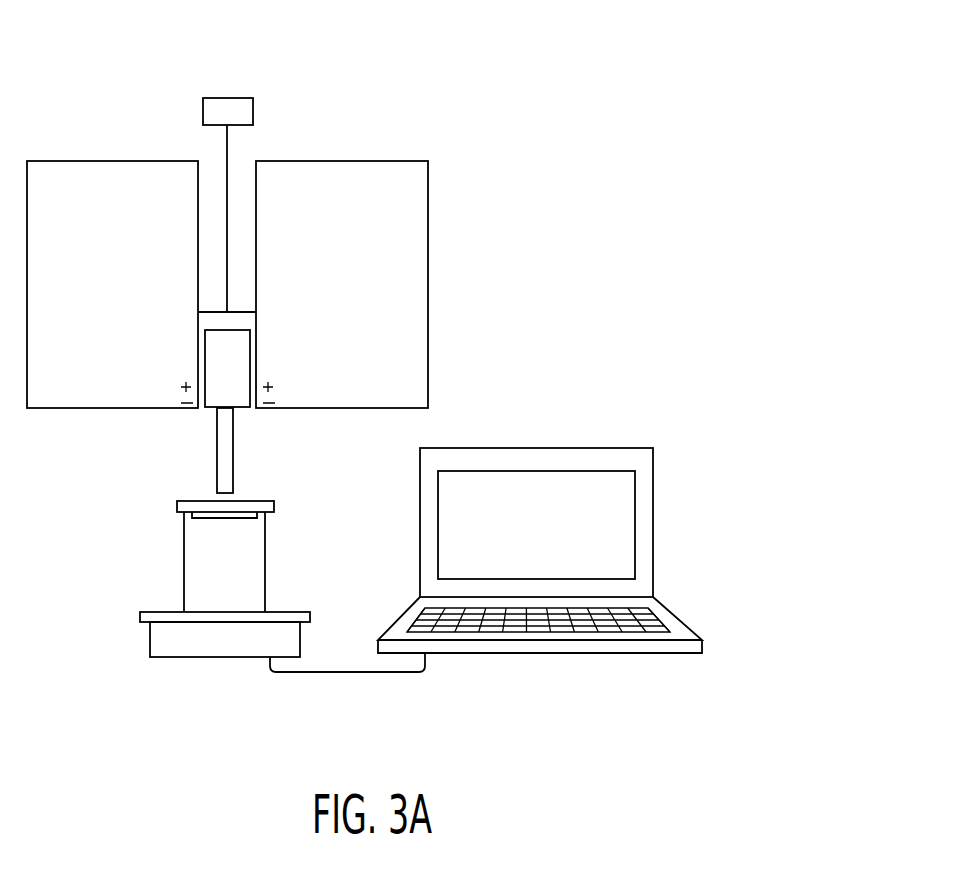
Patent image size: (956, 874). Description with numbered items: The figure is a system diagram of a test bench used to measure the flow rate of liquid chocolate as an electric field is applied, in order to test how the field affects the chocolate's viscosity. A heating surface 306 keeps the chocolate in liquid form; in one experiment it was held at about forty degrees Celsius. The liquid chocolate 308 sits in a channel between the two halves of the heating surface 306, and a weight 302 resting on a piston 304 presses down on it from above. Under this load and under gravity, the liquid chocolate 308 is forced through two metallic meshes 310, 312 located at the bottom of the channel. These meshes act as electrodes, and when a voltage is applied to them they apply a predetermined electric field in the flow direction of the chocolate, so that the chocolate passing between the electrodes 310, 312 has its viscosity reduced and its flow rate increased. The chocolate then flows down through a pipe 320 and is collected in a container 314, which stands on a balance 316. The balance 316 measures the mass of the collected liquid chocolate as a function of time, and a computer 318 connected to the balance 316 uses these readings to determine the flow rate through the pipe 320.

The weight 302 is at (203, 108).
The piston 304 is at (228, 144).
The heating surface 306 is at (533, 229).
The liquid chocolate 308 is at (238, 360).
The metallic mesh 310 is at (172, 390).
The metallic mesh 312 is at (185, 412).
The container 314 is at (185, 570).
The balance 316 is at (205, 658).
The computer 318 is at (662, 499).
The pipe 320 is at (233, 462).